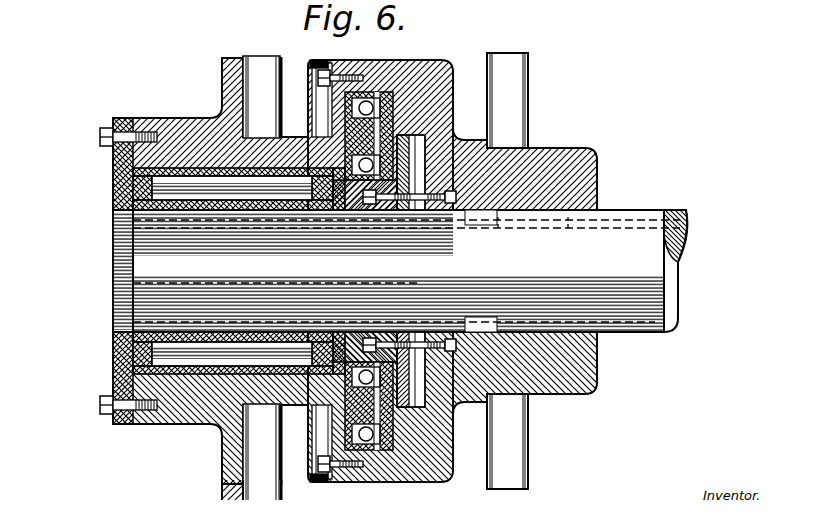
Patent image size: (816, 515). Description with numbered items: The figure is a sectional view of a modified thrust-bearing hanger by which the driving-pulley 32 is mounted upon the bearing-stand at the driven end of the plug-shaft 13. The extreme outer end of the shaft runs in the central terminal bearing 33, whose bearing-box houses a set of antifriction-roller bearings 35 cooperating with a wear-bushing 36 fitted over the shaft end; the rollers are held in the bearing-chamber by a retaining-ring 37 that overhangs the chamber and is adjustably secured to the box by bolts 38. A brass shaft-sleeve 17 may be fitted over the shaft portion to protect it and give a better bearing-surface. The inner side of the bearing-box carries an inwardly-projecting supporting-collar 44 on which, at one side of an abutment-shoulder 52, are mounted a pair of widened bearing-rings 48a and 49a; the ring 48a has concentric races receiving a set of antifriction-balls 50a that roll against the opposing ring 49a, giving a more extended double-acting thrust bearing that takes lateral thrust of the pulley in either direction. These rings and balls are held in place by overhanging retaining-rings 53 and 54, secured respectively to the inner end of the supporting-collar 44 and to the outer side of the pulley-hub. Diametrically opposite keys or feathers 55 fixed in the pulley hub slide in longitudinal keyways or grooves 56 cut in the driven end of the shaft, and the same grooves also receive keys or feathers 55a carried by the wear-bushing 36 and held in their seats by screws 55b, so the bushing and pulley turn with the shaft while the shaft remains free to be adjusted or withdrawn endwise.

The plug-shaft 13 is at (113, 265).
The shaft-sleeve 17 is at (678, 215).
The driving-pulley 32 is at (525, 271).
The central terminal bearing 33 is at (210, 278).
The antifriction-roller bearings 35 is at (262, 212).
The wear-bushing 36 is at (192, 212).
The retaining-ring 37 is at (113, 207).
The bolts 38 is at (100, 142).
The supporting-collar 44 is at (360, 212).
The widened bearing-ring 48a is at (332, 110).
The widened bearing-ring 49a is at (405, 95).
The antifriction-balls 50a is at (370, 92).
The abutment-shoulder 52 is at (318, 212).
The retaining-ring 53 is at (425, 150).
The retaining-ring 54 is at (333, 76).
The keys or feathers 55 is at (480, 226).
The keys or feathers 55a is at (213, 212).
The screws 55b is at (230, 212).
The keyways or grooves 56 is at (540, 229).